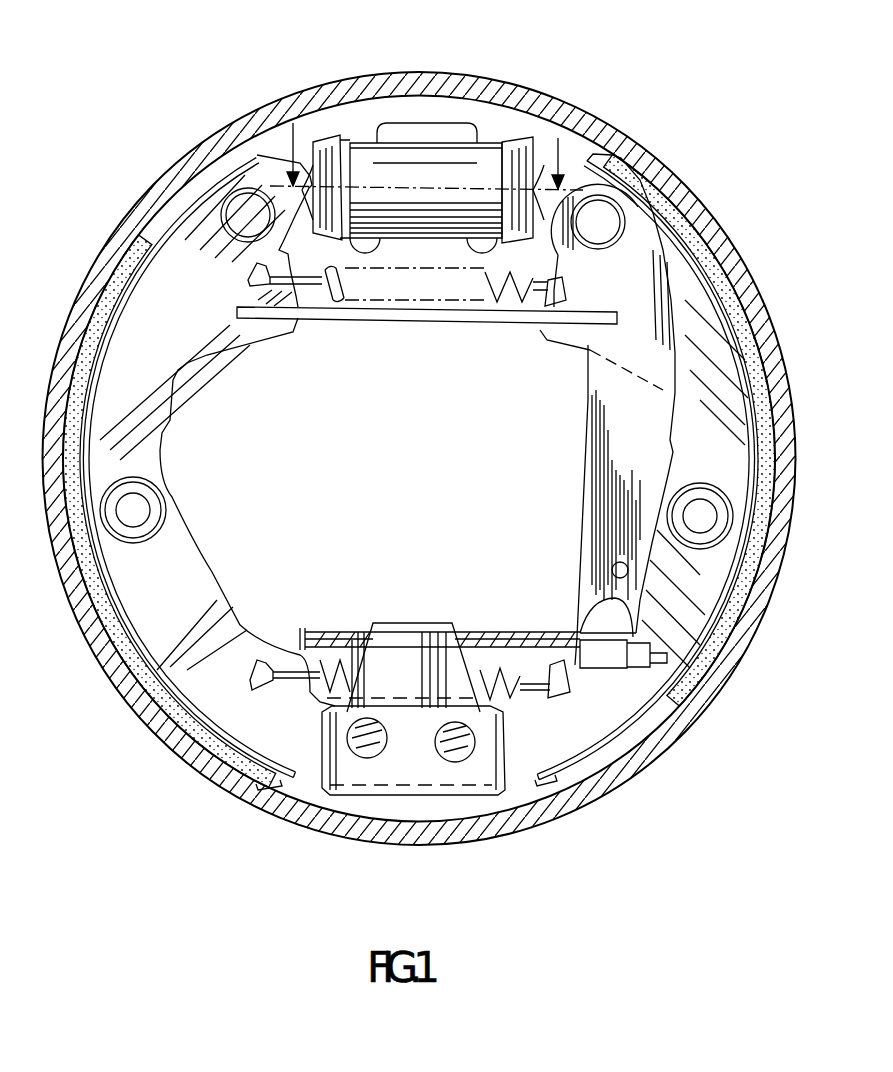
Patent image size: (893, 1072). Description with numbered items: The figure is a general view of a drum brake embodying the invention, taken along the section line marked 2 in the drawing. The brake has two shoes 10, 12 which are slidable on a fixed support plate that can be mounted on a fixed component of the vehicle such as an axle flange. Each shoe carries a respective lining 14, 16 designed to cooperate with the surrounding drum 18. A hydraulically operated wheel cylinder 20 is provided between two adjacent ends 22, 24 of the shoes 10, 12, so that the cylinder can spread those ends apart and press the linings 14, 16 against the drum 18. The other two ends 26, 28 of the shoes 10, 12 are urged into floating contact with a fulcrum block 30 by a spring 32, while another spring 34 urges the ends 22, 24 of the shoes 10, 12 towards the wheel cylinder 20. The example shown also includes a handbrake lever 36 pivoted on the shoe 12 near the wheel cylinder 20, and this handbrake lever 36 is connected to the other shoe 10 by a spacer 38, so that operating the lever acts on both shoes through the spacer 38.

The section line 2- 2 is at (426, 156).
The shoe 10 is at (190, 597).
The shoe 12 is at (697, 470).
The lining 14 is at (122, 646).
The lining 16 is at (747, 566).
The drum 18 is at (410, 72).
The wheel cylinder 20 is at (437, 160).
The end of shoe 22 is at (205, 243).
The end of shoe 24 is at (578, 184).
The end of shoe 26 is at (263, 717).
The end of shoe 28 is at (548, 743).
The fulcrum block 30 is at (400, 716).
The spring 32 is at (512, 643).
The spring 34 is at (497, 296).
The handbrake lever 36 is at (610, 433).
The spacer 38 is at (341, 320).